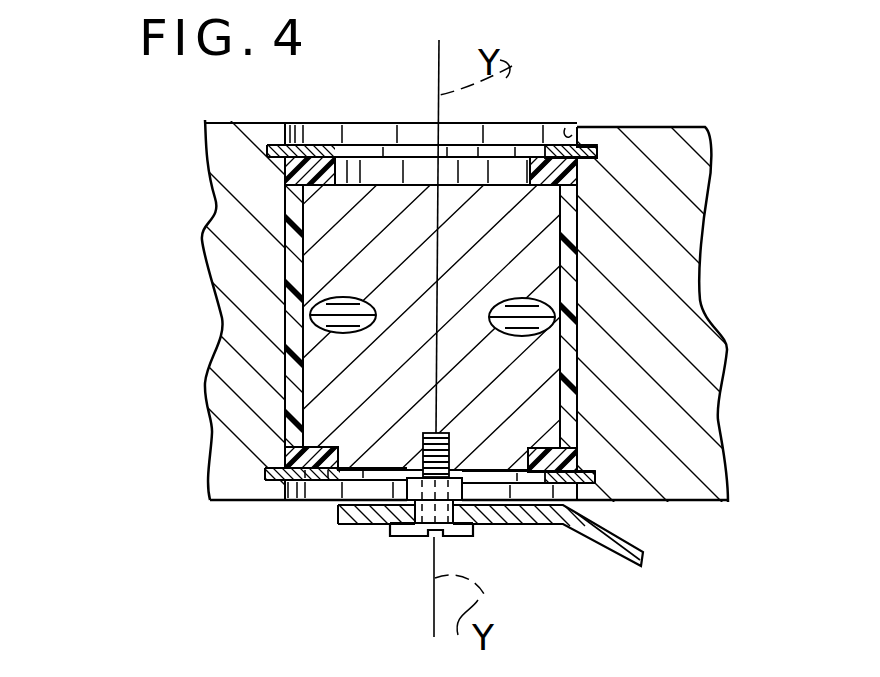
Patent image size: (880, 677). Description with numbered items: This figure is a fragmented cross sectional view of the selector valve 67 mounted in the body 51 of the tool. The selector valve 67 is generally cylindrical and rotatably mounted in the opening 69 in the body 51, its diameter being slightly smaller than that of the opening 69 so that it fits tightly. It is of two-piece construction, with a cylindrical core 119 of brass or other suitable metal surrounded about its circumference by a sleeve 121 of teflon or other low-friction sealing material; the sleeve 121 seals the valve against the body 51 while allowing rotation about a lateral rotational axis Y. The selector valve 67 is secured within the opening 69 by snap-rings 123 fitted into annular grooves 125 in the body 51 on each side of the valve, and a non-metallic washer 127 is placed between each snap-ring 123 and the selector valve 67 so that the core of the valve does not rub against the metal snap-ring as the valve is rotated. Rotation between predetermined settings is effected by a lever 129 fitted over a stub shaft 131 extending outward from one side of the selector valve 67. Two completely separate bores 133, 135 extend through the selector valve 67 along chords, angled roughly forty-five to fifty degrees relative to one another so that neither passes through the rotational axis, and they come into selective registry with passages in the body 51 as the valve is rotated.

The body 51 is at (655, 127).
The selector valve 67 is at (583, 263).
The opening 69 is at (568, 134).
The cylindrical core 119 is at (460, 187).
The sleeve 121 is at (287, 207).
The snap-rings 123 is at (583, 158).
The annular grooves 125 is at (425, 95).
The non-metallic washer 127 is at (316, 157).
The lever 129 is at (515, 528).
The stub shaft 131 is at (420, 540).
The bore 133 is at (328, 333).
The bore 135 is at (535, 333).